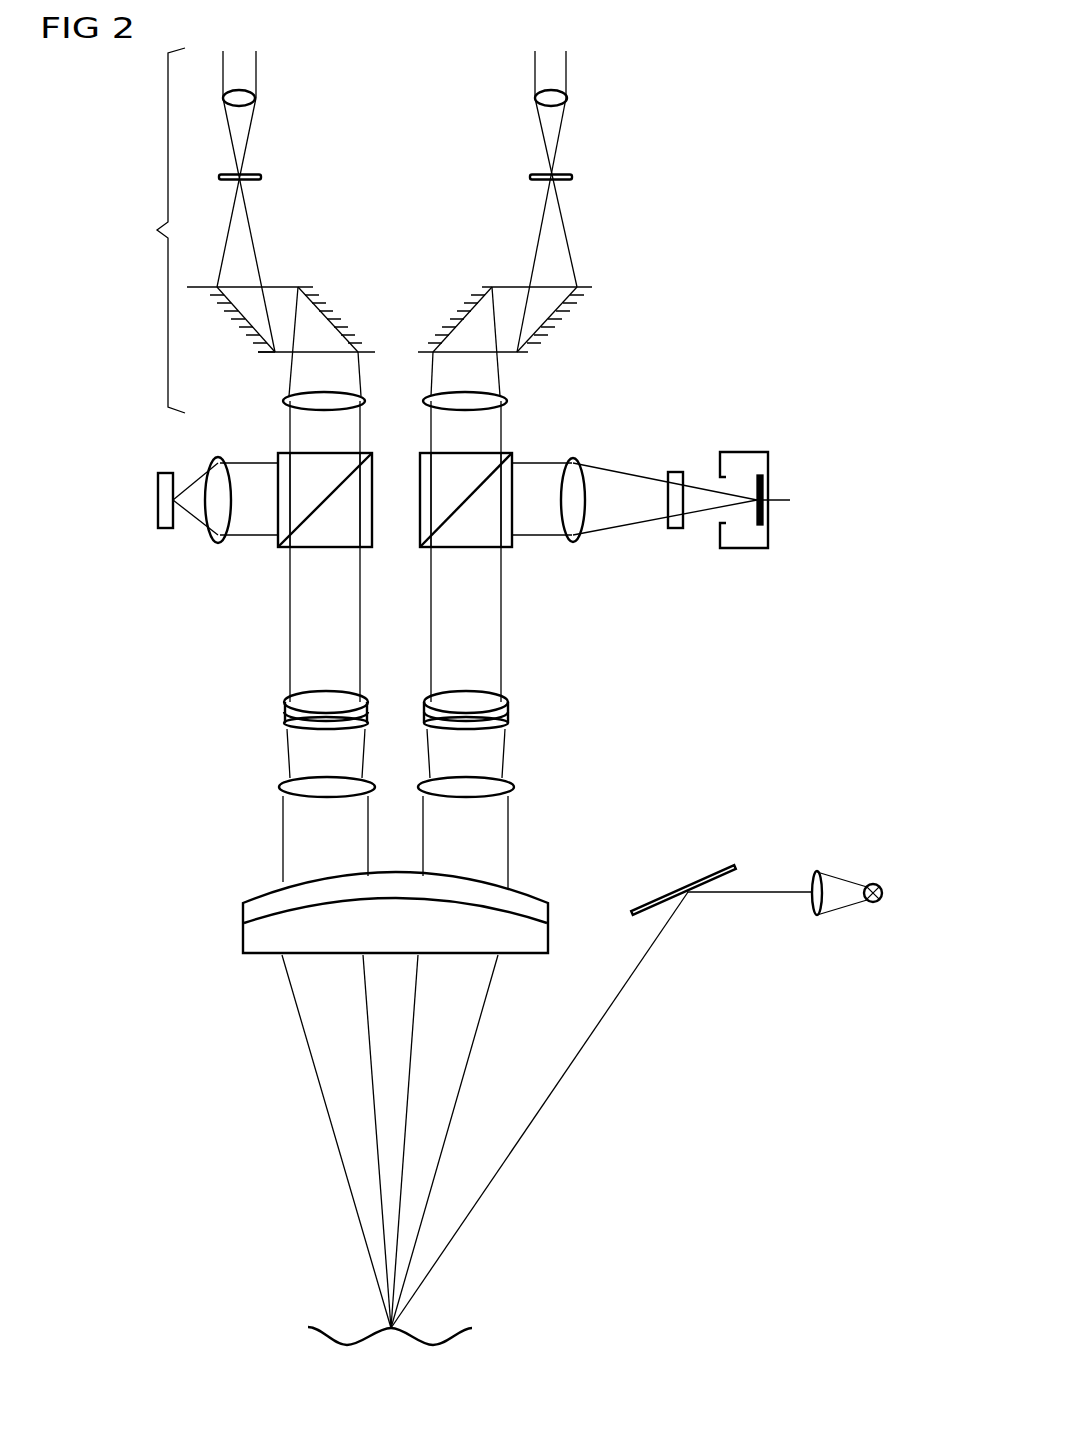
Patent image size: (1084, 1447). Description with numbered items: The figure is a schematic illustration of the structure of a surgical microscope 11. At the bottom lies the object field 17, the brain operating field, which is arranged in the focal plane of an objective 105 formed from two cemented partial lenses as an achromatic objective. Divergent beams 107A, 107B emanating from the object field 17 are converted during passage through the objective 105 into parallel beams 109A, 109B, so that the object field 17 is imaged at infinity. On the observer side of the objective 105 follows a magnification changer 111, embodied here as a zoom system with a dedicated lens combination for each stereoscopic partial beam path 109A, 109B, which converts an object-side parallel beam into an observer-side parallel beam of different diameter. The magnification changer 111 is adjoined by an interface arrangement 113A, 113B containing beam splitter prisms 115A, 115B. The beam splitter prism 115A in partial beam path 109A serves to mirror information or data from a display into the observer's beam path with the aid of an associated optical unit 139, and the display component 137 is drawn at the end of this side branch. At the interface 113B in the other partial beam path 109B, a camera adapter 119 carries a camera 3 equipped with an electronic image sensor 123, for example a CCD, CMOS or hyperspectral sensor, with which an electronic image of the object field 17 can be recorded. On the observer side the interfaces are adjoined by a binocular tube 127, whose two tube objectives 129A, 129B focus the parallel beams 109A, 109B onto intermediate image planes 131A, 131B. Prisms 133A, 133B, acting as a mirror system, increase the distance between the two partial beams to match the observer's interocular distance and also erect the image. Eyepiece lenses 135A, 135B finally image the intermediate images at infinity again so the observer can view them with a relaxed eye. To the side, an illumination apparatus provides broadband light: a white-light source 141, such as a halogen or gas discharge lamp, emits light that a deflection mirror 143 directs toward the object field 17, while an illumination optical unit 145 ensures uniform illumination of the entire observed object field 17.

The camera 3 is at (741, 452).
The surgical microscope 11 is at (681, 289).
The object field 17 is at (405, 1327).
The objective 105 is at (222, 852).
The divergent beam 107A is at (318, 1083).
The divergent beam 107B is at (477, 1035).
The parallel beam 109A is at (283, 822).
The parallel beam 109B is at (508, 835).
The magnification changer 111 is at (247, 673).
The interface 113A is at (311, 541).
The interface 113B is at (481, 541).
The beam splitter prism 115A is at (376, 522).
The beam splitter prism 115B is at (419, 495).
The camera adapter 119 is at (685, 450).
The electronic image sensor 123 is at (765, 487).
The binocular tube 127 is at (146, 230).
The tube objective 129A is at (285, 401).
The tube objective 129B is at (508, 401).
The intermediate image plane 131A is at (262, 177).
The intermediate image plane 131B is at (573, 177).
The prism 133A is at (287, 273).
The prism 133B is at (504, 274).
The eyepiece lens 135A is at (258, 98).
The eyepiece lens 135B is at (568, 98).
The detector 137 is at (158, 497).
The optical unit 139 is at (210, 459).
The white-light source 141 is at (882, 888).
The deflection mirror 143 is at (702, 868).
The illumination optical unit 145 is at (815, 870).